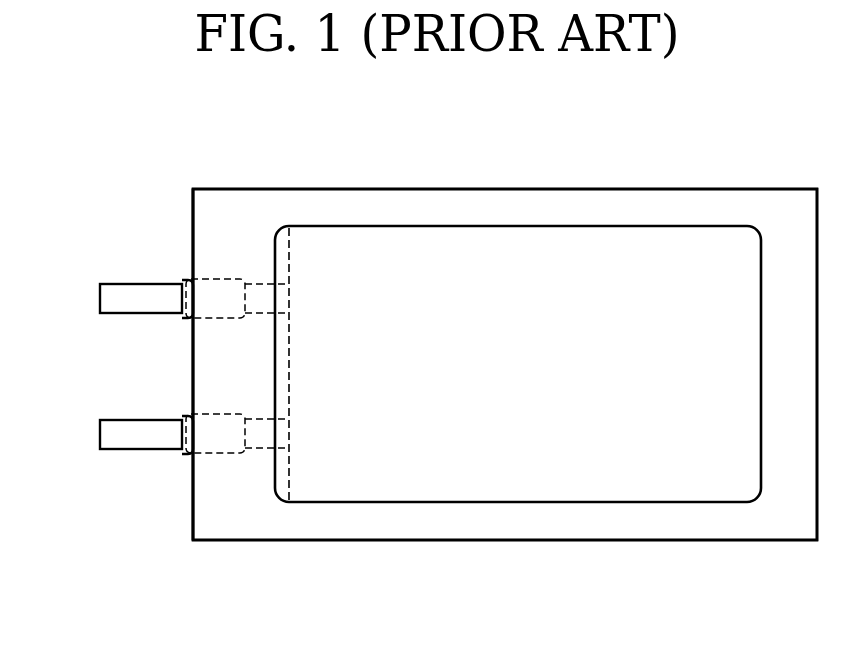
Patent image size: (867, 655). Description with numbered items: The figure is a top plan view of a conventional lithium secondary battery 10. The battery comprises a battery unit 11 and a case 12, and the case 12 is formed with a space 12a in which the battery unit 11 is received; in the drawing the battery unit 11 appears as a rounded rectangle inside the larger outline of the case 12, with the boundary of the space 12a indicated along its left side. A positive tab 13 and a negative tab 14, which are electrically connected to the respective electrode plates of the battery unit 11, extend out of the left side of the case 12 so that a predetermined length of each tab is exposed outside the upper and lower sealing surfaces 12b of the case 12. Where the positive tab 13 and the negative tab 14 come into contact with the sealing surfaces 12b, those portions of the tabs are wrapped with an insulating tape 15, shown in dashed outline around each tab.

The lithium secondary battery 10 is at (630, 161).
The battery unit 11 is at (472, 455).
The case 12 is at (616, 525).
The space 12a is at (284, 487).
The upper and lower sealing surfaces 12b is at (205, 513).
The positive tab 13 is at (100, 299).
The negative tab 14 is at (100, 436).
The insulating tape 15 is at (203, 297).